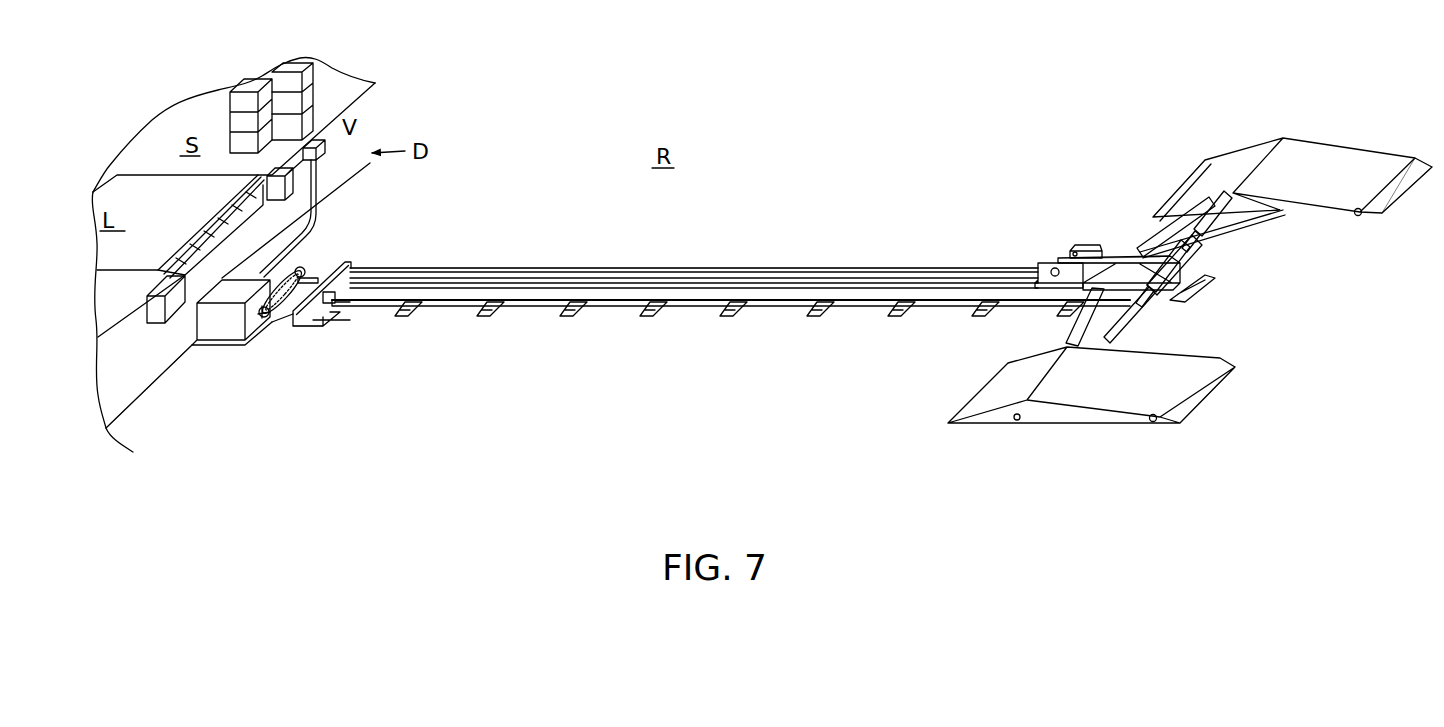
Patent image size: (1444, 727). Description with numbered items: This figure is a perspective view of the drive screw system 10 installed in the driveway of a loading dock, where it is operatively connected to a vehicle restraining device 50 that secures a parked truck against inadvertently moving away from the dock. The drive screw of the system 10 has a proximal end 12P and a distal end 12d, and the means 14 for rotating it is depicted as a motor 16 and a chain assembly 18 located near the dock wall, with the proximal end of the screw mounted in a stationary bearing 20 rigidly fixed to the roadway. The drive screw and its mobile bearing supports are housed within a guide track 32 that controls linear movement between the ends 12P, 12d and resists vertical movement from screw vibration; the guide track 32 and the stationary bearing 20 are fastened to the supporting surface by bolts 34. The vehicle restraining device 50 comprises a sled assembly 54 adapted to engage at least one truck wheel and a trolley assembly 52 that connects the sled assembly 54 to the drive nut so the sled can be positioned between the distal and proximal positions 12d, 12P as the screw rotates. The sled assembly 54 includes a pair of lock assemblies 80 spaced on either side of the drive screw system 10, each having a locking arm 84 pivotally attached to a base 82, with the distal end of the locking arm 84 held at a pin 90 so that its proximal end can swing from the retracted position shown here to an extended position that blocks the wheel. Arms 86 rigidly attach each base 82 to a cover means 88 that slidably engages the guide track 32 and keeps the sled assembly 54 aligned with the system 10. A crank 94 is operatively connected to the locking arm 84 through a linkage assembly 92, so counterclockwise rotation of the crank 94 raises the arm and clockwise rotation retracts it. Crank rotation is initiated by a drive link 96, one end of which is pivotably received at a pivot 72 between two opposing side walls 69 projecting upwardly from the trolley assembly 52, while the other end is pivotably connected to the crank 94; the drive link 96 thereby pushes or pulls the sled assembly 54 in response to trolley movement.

The drive screw system 10 is at (817, 244).
The proximal end of the drive screw 12P is at (358, 252).
The distal end of the drive screw 12d is at (1034, 238).
The means for rotating the drive screw 14 is at (212, 358).
The motor 16 is at (233, 330).
The chain assembly 18 is at (281, 322).
The stationary bearing 20 is at (346, 252).
The guide track 32 is at (700, 267).
The bolts 34 is at (892, 318).
The vehicle restraining device 50 is at (1268, 325).
The trolley assembly 52 is at (1090, 228).
The sled assembly 54 is at (1390, 220).
The side walls 69 is at (1053, 268).
The pivot 72 is at (1073, 249).
The lock assembly 80 is at (1330, 124).
The base 82 is at (1250, 148).
The locking arm 84 is at (1367, 147).
The arms 86 is at (1148, 248).
The cover means 88 is at (1197, 281).
The pin 90 is at (1155, 423).
The linkage assembly 92 is at (1233, 243).
The crank 94 is at (1200, 257).
The drive link 96 is at (1118, 258).